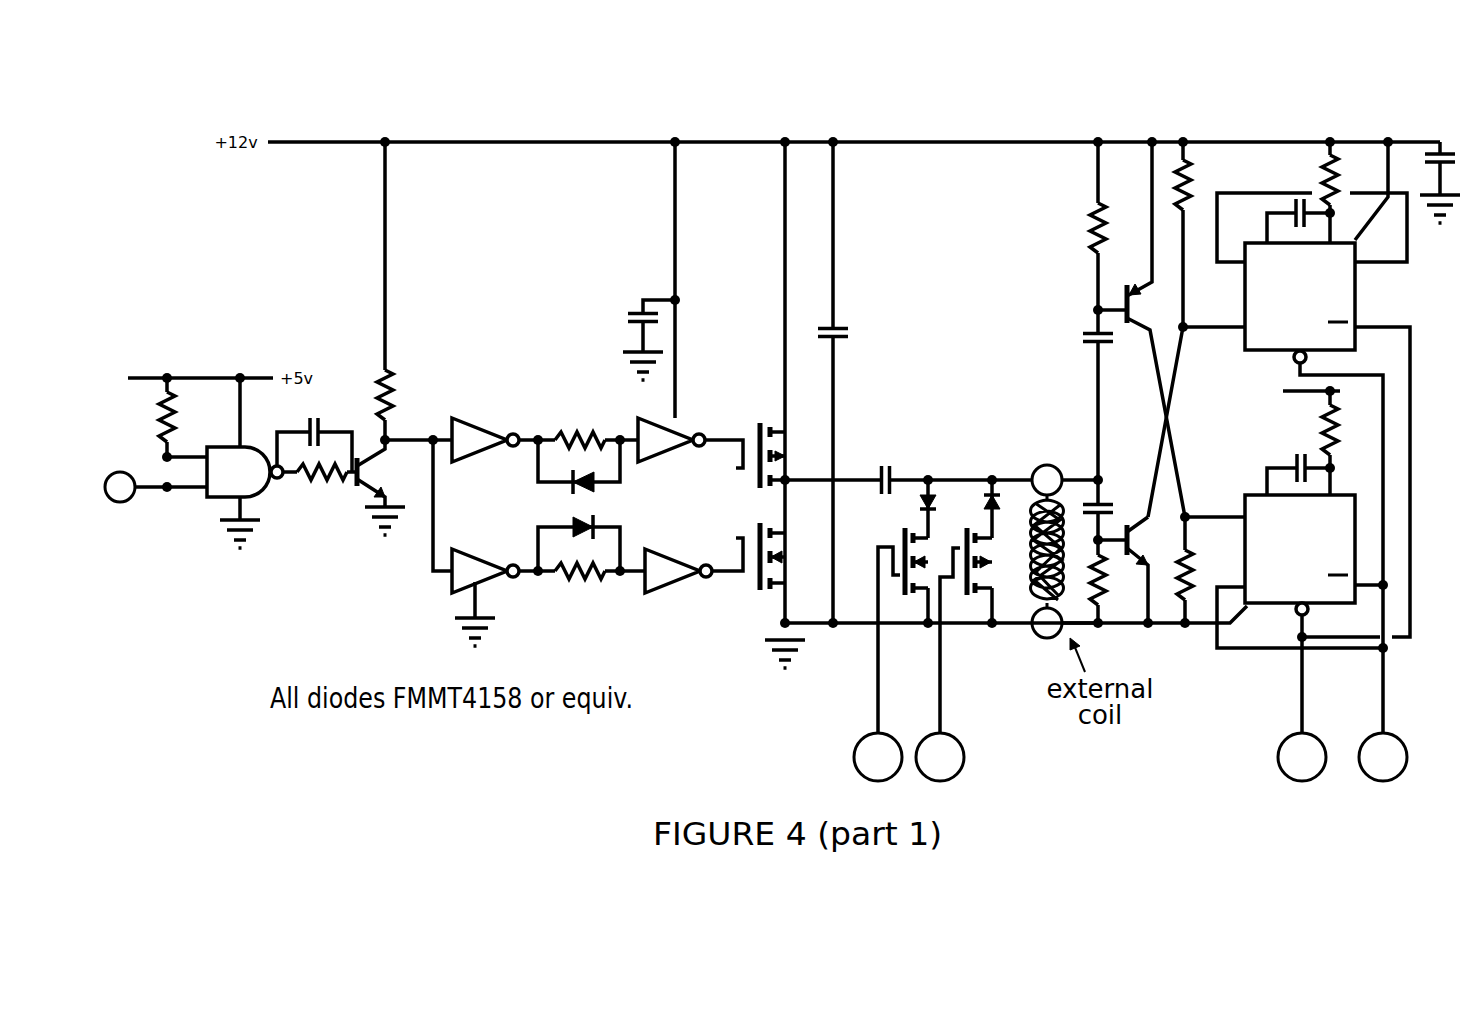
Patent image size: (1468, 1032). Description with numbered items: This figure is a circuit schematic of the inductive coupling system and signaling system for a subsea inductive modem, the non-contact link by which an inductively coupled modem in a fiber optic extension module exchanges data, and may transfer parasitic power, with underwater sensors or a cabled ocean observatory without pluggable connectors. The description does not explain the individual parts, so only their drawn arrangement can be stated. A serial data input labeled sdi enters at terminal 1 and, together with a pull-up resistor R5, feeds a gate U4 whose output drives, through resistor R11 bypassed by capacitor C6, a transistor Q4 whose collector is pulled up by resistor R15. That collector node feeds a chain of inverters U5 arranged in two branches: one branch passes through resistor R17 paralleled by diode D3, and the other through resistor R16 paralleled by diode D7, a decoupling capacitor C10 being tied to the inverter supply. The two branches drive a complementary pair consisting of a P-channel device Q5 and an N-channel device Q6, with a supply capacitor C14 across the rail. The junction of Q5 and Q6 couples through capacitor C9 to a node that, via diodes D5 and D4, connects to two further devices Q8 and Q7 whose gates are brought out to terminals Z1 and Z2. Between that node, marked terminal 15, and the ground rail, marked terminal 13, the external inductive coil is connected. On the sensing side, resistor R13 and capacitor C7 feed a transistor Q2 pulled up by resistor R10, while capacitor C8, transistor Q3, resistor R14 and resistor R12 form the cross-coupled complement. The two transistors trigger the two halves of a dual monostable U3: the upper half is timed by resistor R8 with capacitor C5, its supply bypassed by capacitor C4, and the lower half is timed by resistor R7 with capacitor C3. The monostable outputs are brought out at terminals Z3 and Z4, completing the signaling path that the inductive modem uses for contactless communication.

The resistor 1M R5 is at (152, 435).
The sdi input terminal 1 is at (156, 475).
The AND gate U4 is at (238, 463).
The resistor 100k R11 is at (320, 484).
The capacitor 27pf C6 is at (314, 432).
The transistor Q4 is at (385, 485).
The resistor 10k R15 is at (406, 291).
The inverter 4049 U5 is at (590, 394).
The resistor 10k R17 is at (585, 430).
The diode D3 is at (579, 467).
The resistor 10k R16 is at (589, 583).
The diode D7 is at (581, 536).
The capacitor 0.1uF C10 is at (651, 314).
The P-channel MOSFET IRLML5103 Q5 is at (762, 319).
The N-channel MOSFET IRLML2803 Q6 is at (752, 564).
The capacitor 1.0 C14 is at (852, 382).
The capacitor 0.01 C9 is at (908, 459).
The diode D5 is at (943, 500).
The diode D4 is at (1007, 500).
The MOSFET IRLML2803 Q8 is at (929, 518).
The MOSFET IRLML5103 Q7 is at (992, 518).
The terminal Z1 is at (878, 664).
The terminal Z2 is at (940, 664).
The coil terminal 15 is at (1065, 480).
The coil terminal 13 is at (1065, 623).
The resistor 27k R13 is at (1082, 228).
The capacitor 100pf C7 is at (1118, 397).
The PNP transistor Q2 is at (1141, 329).
The resistor 27k R10 is at (1196, 329).
The capacitor 100pf C8 is at (1122, 507).
The NPN transistor Q3 is at (1137, 570).
The resistor 27k R14 is at (1119, 581).
The resistor 27k R12 is at (1211, 567).
The monostable 4098 U3 is at (1313, 438).
The resistor 47k R8 is at (1349, 180).
The capacitor 100pf C5 is at (1288, 208).
The capacitor 0.1 C4 is at (1440, 160).
The resistor 47k R7 is at (1290, 428).
The capacitor 100pf C3 is at (1273, 469).
The terminal Z3 is at (1302, 757).
The terminal Z4 is at (1383, 757).